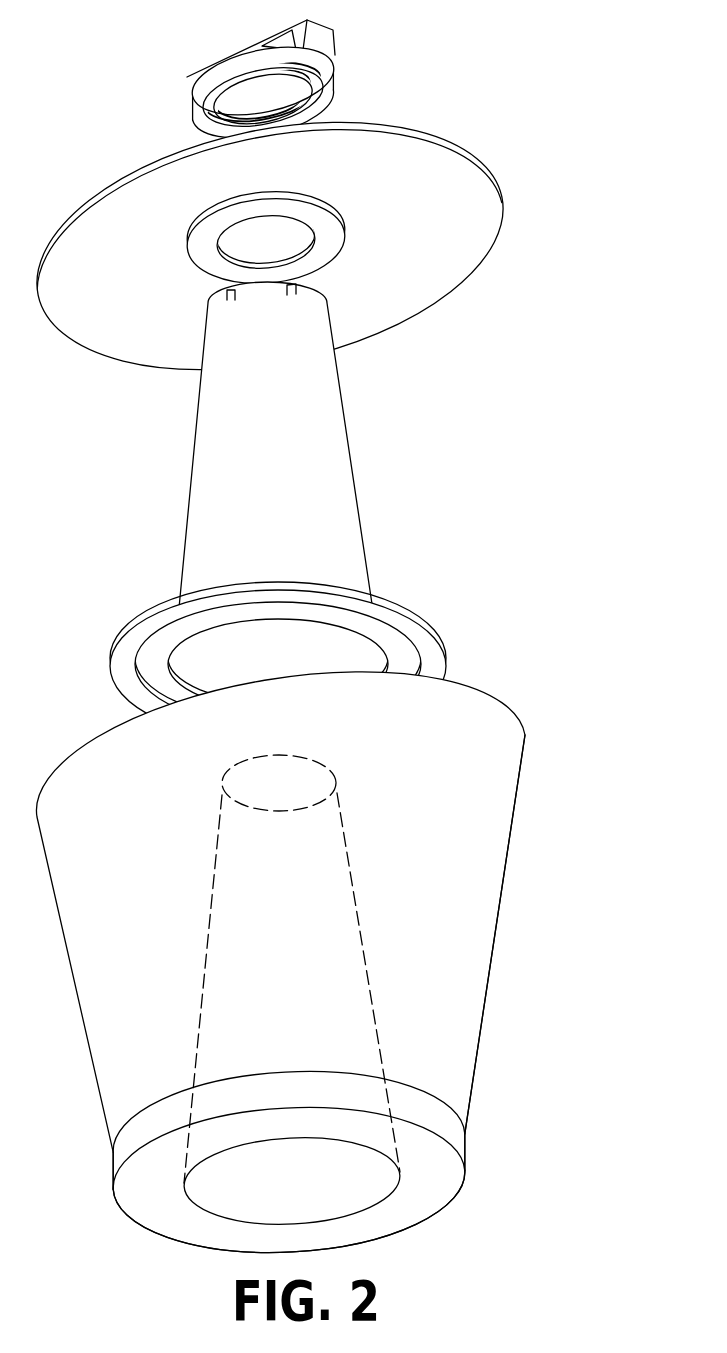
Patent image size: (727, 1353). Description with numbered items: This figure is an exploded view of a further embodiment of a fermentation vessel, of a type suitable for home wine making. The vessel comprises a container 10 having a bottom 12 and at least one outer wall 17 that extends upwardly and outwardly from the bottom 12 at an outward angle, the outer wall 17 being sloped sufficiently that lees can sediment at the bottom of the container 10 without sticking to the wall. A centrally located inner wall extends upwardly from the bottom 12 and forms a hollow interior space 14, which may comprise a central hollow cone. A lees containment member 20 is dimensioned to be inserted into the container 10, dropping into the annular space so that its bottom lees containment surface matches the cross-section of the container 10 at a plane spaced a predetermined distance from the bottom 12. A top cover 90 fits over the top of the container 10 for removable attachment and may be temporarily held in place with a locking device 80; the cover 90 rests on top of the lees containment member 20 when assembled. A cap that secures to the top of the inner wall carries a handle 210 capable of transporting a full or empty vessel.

The container 10 is at (482, 825).
The bottom 12 is at (463, 1185).
The hollow interior space 14 is at (303, 980).
The outer wall 17 is at (498, 927).
The lees containment member 20 is at (350, 443).
The locking device 80 is at (327, 103).
The top cover 90 is at (483, 203).
The handle 210 is at (333, 55).